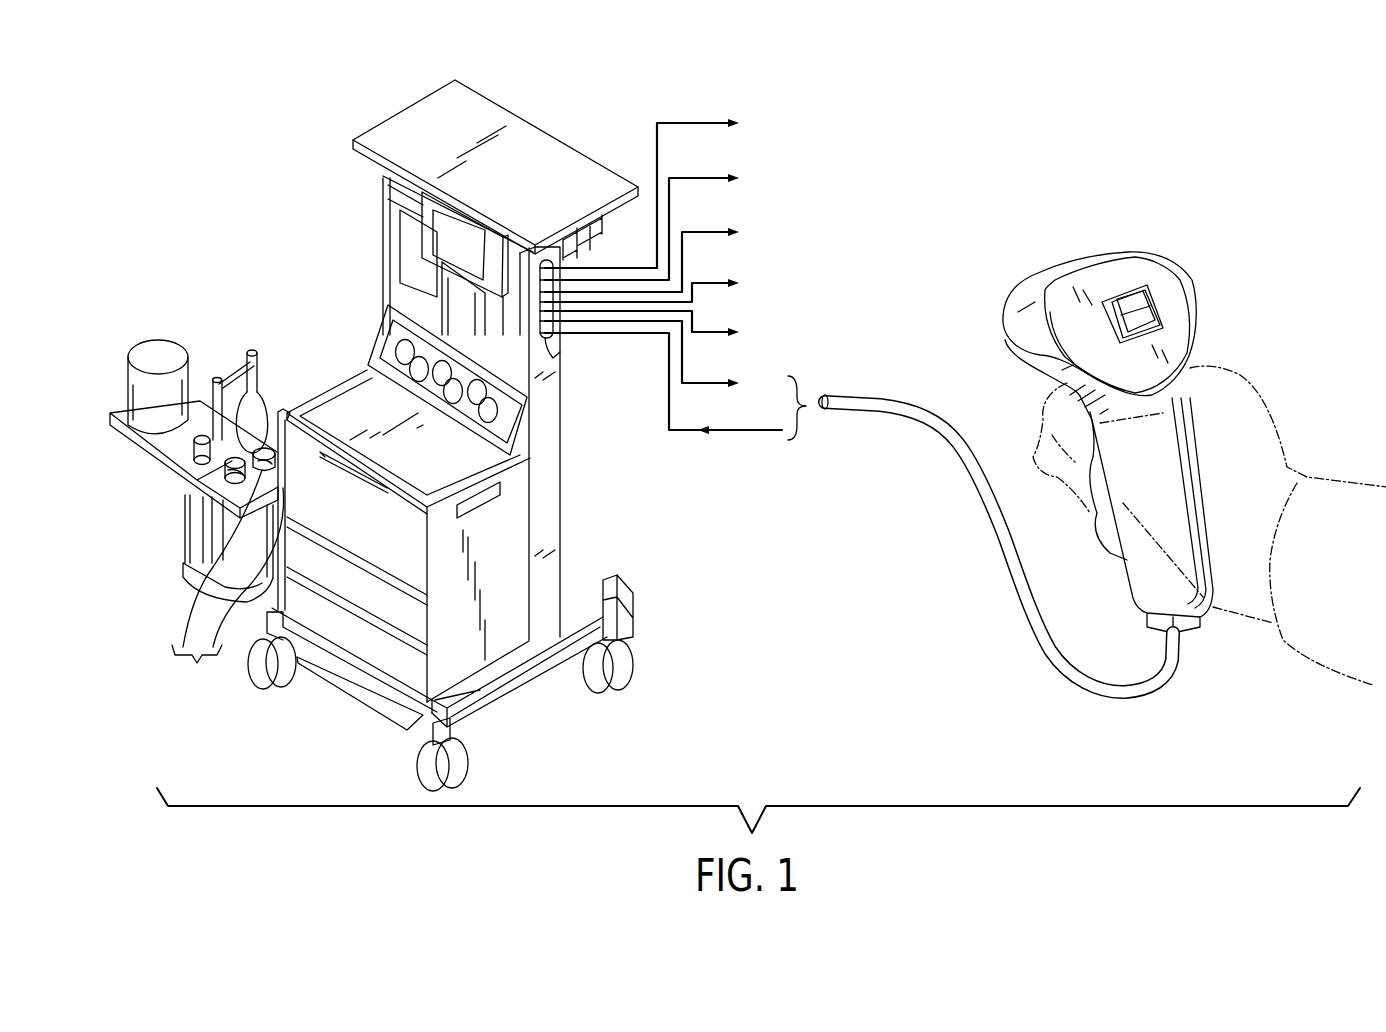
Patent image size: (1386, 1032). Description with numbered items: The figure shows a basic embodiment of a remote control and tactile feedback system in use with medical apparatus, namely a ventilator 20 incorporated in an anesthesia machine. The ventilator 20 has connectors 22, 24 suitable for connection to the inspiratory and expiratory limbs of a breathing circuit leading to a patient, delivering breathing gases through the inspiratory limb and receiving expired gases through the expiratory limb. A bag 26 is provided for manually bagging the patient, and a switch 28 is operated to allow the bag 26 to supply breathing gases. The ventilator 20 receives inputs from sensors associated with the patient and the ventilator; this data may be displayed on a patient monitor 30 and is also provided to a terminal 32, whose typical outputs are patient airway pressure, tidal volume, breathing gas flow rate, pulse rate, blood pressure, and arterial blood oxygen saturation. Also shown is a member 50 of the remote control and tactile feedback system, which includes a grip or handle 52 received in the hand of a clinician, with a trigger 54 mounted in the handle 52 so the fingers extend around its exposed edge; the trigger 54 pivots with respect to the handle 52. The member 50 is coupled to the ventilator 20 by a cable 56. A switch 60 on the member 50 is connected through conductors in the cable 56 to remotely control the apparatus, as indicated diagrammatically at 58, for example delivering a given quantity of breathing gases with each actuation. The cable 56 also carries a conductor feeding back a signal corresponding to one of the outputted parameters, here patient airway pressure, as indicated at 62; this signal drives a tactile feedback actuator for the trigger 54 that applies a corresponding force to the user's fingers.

The ventilator 20 is at (318, 265).
The connector 22 is at (226, 471).
The connector 24 is at (254, 455).
The bag 26 is at (258, 397).
The switch 28 is at (194, 457).
The patient monitor 30 is at (474, 222).
The terminal 32 is at (556, 345).
The member 50 is at (1145, 222).
The handle 52 is at (1148, 590).
The trigger 54 is at (1102, 528).
The cable 56 is at (1022, 625).
The remote control indication 58 is at (669, 433).
The switch 60 is at (1140, 302).
The fed-back parameter 62 is at (713, 386).